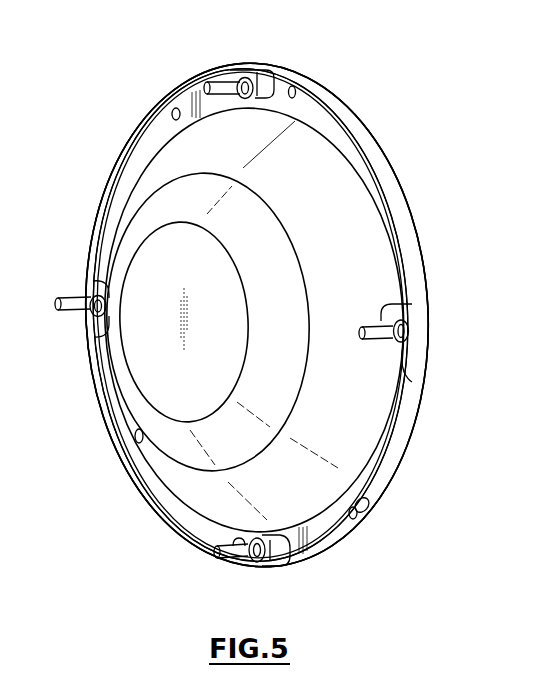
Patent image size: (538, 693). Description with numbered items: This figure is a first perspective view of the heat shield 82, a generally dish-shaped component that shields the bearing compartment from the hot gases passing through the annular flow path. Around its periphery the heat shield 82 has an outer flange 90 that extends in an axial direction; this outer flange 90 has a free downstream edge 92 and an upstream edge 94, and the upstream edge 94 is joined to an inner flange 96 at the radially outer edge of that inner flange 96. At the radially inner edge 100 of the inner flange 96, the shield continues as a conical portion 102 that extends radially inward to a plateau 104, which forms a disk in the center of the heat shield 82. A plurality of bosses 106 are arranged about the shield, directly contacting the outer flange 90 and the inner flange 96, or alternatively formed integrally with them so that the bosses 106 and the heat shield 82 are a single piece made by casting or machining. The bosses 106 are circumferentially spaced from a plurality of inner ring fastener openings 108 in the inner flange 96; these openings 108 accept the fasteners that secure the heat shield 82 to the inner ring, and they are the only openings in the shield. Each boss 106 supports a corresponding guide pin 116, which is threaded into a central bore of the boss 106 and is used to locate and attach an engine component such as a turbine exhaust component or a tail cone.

The heat shield 82 is at (113, 88).
The outer flange 90 is at (369, 145).
The free downstream edge 92 is at (126, 476).
The upstream edge 94 is at (395, 169).
The inner flange 96 is at (330, 124).
The radially inner edge 100 is at (349, 180).
The conical portion 102 is at (345, 247).
The plateau 104 is at (153, 334).
The bosses 106 is at (274, 88).
The inner ring fastener openings 108 is at (175, 108).
The guide pin 116 is at (221, 86).